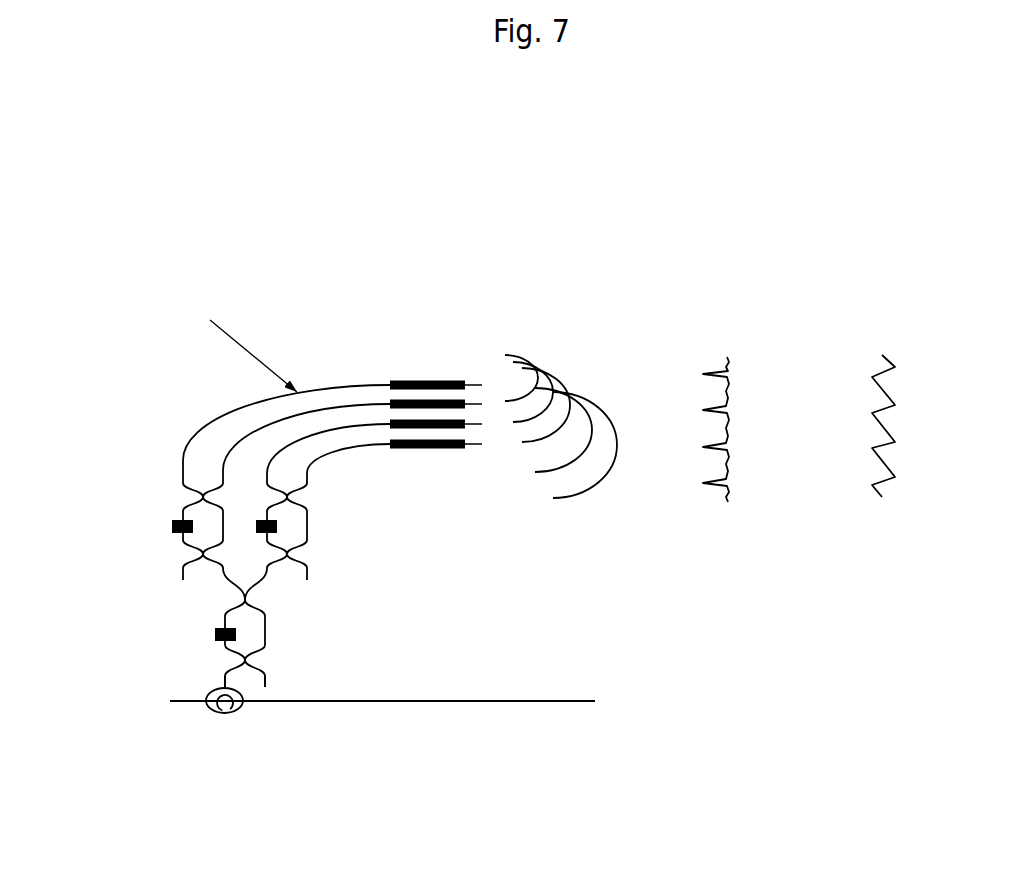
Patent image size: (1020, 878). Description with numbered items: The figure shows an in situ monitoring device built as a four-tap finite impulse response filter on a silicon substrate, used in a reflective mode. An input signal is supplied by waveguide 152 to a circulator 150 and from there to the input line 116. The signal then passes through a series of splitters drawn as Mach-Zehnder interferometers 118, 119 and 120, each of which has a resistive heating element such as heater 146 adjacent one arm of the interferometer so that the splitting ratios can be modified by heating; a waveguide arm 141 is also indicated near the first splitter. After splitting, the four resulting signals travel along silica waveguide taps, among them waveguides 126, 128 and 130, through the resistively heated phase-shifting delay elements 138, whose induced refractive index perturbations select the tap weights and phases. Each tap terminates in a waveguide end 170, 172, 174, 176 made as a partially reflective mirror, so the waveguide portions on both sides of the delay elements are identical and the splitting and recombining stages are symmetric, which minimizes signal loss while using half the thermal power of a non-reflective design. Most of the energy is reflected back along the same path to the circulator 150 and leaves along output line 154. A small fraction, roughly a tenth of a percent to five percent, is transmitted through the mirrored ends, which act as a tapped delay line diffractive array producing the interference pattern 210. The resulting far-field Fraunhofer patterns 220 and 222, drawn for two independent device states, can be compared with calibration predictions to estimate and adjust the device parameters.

The input line 116 is at (207, 680).
The Mach-Zehnder interferometer 118 is at (315, 636).
The Mach-Zehnder interferometer 119 is at (150, 532).
The Mach-Zehnder interferometer 120 is at (317, 547).
The silica waveguide 126 is at (323, 403).
The silica waveguide 128 is at (360, 420).
The silica waveguide 130 is at (360, 443).
The phase-shifting/delay elements 138 is at (452, 458).
The waveguide arm 141 is at (272, 650).
The heating element 146 is at (193, 636).
The circulator 150 is at (240, 712).
The waveguide 152 is at (180, 698).
The output line 154 is at (497, 700).
The waveguide end 170 is at (478, 380).
The waveguide end 172 is at (427, 404).
The waveguide end 174 is at (427, 424).
The waveguide end 176 is at (427, 444).
The interference pattern 210 is at (570, 320).
The Fraunhofer diffraction pattern 220 is at (720, 337).
The Fraunhofer diffraction pattern 222 is at (887, 337).